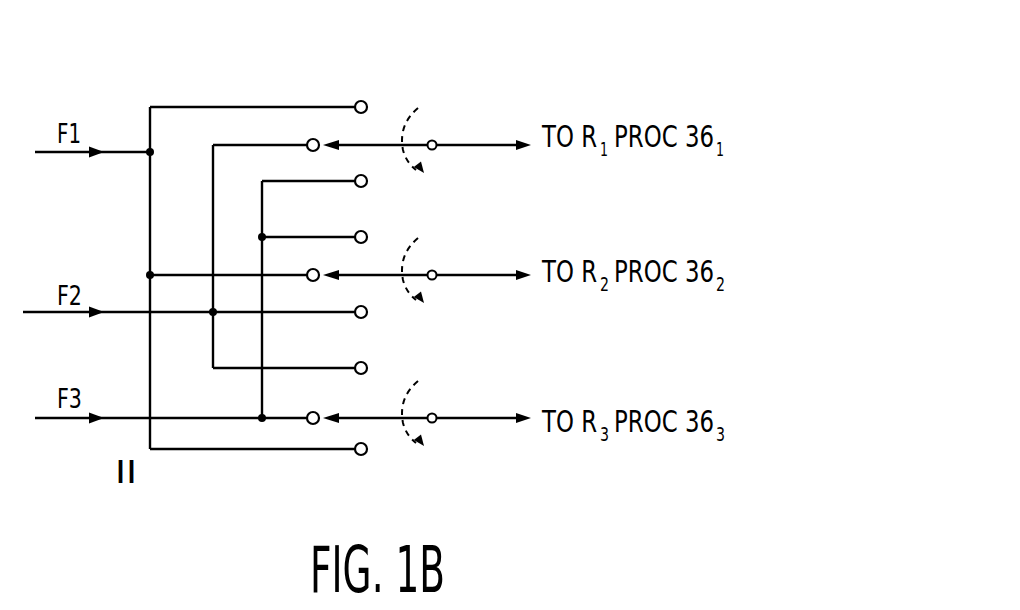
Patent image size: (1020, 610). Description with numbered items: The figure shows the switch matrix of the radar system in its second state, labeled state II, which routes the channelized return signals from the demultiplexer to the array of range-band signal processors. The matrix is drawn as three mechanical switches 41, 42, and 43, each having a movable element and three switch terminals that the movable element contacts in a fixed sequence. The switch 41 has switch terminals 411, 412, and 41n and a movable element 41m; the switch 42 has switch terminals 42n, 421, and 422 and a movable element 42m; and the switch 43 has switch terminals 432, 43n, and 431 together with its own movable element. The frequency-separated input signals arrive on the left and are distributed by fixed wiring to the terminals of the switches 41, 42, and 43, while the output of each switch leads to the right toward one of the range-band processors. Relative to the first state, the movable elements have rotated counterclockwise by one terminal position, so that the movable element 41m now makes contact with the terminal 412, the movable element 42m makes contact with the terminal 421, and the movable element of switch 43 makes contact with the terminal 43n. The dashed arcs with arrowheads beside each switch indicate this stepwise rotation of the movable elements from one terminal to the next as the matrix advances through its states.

The switch 41 is at (368, 50).
The switch terminal 411 is at (357, 101).
The switch terminal 412 is at (307, 144).
The switch terminal 41n is at (368, 185).
The movable element 41m is at (382, 145).
The switch 42 is at (460, 202).
The switch terminal 421 is at (307, 273).
The switch terminal 422 is at (367, 317).
The switch terminal 42n is at (357, 234).
The movable element 42m is at (414, 275).
The switch 43 is at (450, 454).
The switch terminal 431 is at (362, 456).
The switch terminal 432 is at (357, 364).
The switch terminal 43n is at (307, 416).